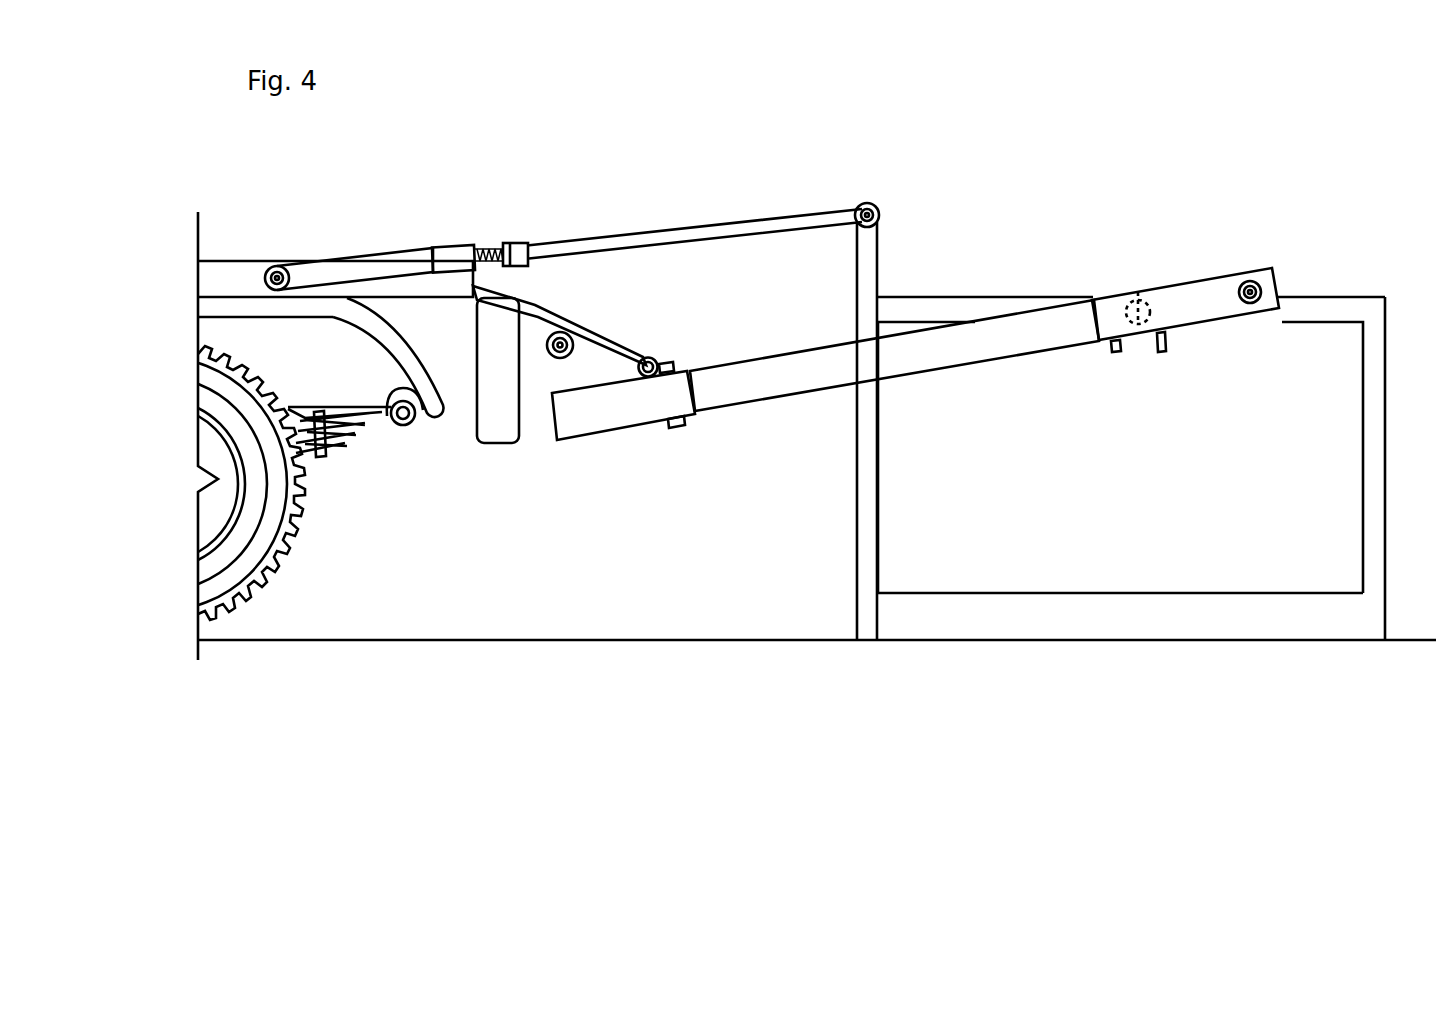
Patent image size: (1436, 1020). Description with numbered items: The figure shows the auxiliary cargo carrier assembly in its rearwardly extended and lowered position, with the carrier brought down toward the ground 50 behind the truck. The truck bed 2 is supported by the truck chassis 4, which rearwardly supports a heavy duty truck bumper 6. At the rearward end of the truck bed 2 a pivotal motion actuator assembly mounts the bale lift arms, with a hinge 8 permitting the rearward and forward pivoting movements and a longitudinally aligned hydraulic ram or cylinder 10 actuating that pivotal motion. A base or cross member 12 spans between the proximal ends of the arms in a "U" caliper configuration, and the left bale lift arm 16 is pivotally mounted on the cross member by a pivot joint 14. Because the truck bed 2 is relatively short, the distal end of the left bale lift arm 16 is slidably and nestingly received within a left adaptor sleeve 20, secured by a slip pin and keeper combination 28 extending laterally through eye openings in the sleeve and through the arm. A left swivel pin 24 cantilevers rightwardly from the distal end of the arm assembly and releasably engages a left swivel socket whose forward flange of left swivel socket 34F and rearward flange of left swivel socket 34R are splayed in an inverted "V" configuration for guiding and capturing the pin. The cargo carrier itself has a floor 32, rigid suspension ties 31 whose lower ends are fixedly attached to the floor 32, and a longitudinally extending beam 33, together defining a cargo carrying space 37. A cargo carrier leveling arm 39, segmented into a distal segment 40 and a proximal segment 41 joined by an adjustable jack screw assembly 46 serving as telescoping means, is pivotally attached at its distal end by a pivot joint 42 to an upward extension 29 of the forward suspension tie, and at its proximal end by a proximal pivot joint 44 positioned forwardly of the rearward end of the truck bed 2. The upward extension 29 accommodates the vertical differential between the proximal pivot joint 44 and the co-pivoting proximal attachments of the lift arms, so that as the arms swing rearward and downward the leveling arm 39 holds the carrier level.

The truck bed 2 is at (228, 277).
The truck chassis 4 is at (465, 398).
The heavy duty truck bumper 6 is at (498, 432).
The hinge 8 is at (553, 332).
The hydraulic ram or cylinder 10 is at (580, 330).
The base or cross member 12 is at (628, 412).
The pivot joint 14 is at (673, 367).
The left bale lift arm 16 is at (815, 378).
The left adaptor sleeve 20 is at (1205, 313).
The left swivel pin 24 is at (1138, 290).
The slip pin and keeper combination 28 is at (1252, 282).
The upward extension 29 is at (872, 260).
The rigid suspension ties 31 is at (880, 455).
The floor 32 is at (1123, 607).
The longitudinally extending beam 33 is at (988, 300).
The forward flange of left swivel socket 34F is at (1115, 345).
The rearward flange of left swivel socket 34R is at (1160, 345).
The cargo carrying space 37 is at (1027, 516).
The cargo carrier leveling arm 39 is at (585, 226).
The distal segment 40 is at (668, 228).
The proximal segment 41 is at (393, 267).
The pivot joint 42 is at (872, 205).
The proximal pivot joint 44 is at (283, 267).
The adjustable jack screw assembly 46 is at (517, 242).
The ground 50 is at (678, 638).